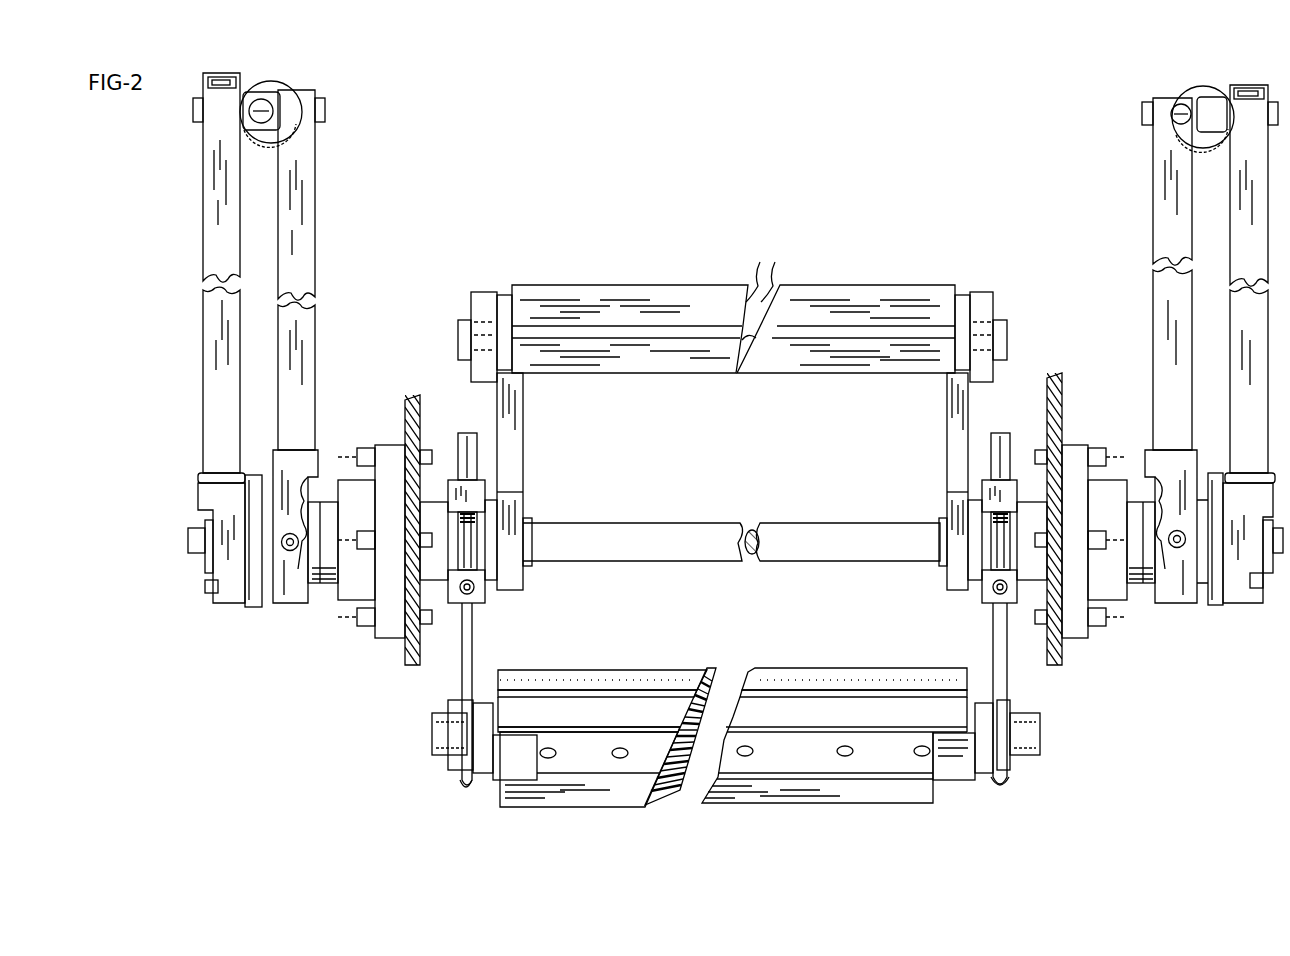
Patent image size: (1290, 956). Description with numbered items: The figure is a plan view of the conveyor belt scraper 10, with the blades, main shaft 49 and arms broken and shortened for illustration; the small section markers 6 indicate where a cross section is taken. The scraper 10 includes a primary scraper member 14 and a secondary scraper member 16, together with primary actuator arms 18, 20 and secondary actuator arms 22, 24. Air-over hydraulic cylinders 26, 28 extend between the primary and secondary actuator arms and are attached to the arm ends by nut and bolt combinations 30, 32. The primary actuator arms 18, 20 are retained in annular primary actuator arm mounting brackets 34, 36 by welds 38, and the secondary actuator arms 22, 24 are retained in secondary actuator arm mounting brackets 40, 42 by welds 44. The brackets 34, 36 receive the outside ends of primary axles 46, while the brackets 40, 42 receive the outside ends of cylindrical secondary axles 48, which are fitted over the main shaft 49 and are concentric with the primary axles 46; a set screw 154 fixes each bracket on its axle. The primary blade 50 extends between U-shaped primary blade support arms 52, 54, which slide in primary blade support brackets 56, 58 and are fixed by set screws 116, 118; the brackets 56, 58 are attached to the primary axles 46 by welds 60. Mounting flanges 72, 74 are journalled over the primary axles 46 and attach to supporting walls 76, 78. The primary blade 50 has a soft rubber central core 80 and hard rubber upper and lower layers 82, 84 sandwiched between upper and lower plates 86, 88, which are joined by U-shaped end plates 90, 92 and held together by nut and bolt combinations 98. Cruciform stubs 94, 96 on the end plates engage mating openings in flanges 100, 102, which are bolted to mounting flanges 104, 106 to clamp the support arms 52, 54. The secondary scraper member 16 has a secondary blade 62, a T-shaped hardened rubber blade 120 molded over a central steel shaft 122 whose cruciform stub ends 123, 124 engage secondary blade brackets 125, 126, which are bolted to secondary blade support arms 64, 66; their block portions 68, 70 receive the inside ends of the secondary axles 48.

The section line 6 is at (1286, 62).
The conveyor belt scraper 10 is at (918, 232).
The primary scraper member 14 is at (745, 722).
The secondary scraper member 16 is at (844, 274).
The primary actuator arm 18 is at (1154, 314).
The primary actuator arm 20 is at (310, 206).
The secondary actuator arm 22 is at (1214, 318).
The secondary actuator arm 24 is at (208, 214).
The air-over hydraulic cylinder 26 is at (1186, 84).
The air-over hydraulic cylinder 28 is at (284, 80).
The nut and bolt combination 30 is at (1142, 134).
The nut and bolt combination 32 is at (325, 112).
The primary actuator arm mounting bracket 34 is at (1212, 606).
The primary actuator arm mounting bracket 36 is at (258, 610).
The weld 38 is at (312, 438).
The secondary actuator arm mounting bracket 40 is at (1226, 604).
The secondary actuator arm mounting bracket 42 is at (230, 604).
The weld 44 is at (200, 470).
The primary axle 46 is at (320, 596).
The secondary axle 48 is at (500, 584).
The main shaft 49 is at (670, 520).
The primary blade 50 is at (854, 662).
The primary blade support arm 52 is at (479, 651).
The primary blade support arm 54 is at (1008, 656).
The primary blade support bracket 56 is at (484, 592).
The primary blade support bracket 58 is at (986, 590).
The weld 60 is at (460, 480).
The secondary blade 62 is at (766, 384).
The secondary blade support arm 64 is at (942, 428).
The secondary blade support arm 66 is at (524, 450).
The block portion 68 is at (944, 502).
The block portion 70 is at (528, 504).
The mounting flange 72 is at (1092, 412).
The mounting flange 74 is at (364, 424).
The wall 76 is at (1062, 396).
The wall 78 is at (402, 402).
The central core 80 is at (622, 672).
The upper layer 82 is at (610, 798).
The lower layer 84 is at (714, 670).
The upper plate 86 is at (780, 786).
The lower plate 88 is at (736, 688).
The U-shaped end plate 90 is at (530, 766).
The U-shaped end plate 92 is at (970, 776).
The stub 94 is at (432, 740).
The stub 96 is at (1040, 736).
The nut and bolt combination 98 is at (846, 760).
The flange 100 is at (450, 764).
The flange 102 is at (1020, 760).
The mounting flange 104 is at (470, 780).
The mounting flange 106 is at (1006, 788).
The set screw 116 is at (988, 596).
The set screw 118 is at (462, 610).
The T-shaped blade 120 is at (848, 368).
The central steel shaft 122 is at (768, 271).
The stub end 123 is at (1012, 340).
The stub end 124 is at (458, 342).
The secondary blade bracket 125 is at (979, 296).
The secondary blade bracket 126 is at (480, 292).
The set screw 154 is at (280, 604).